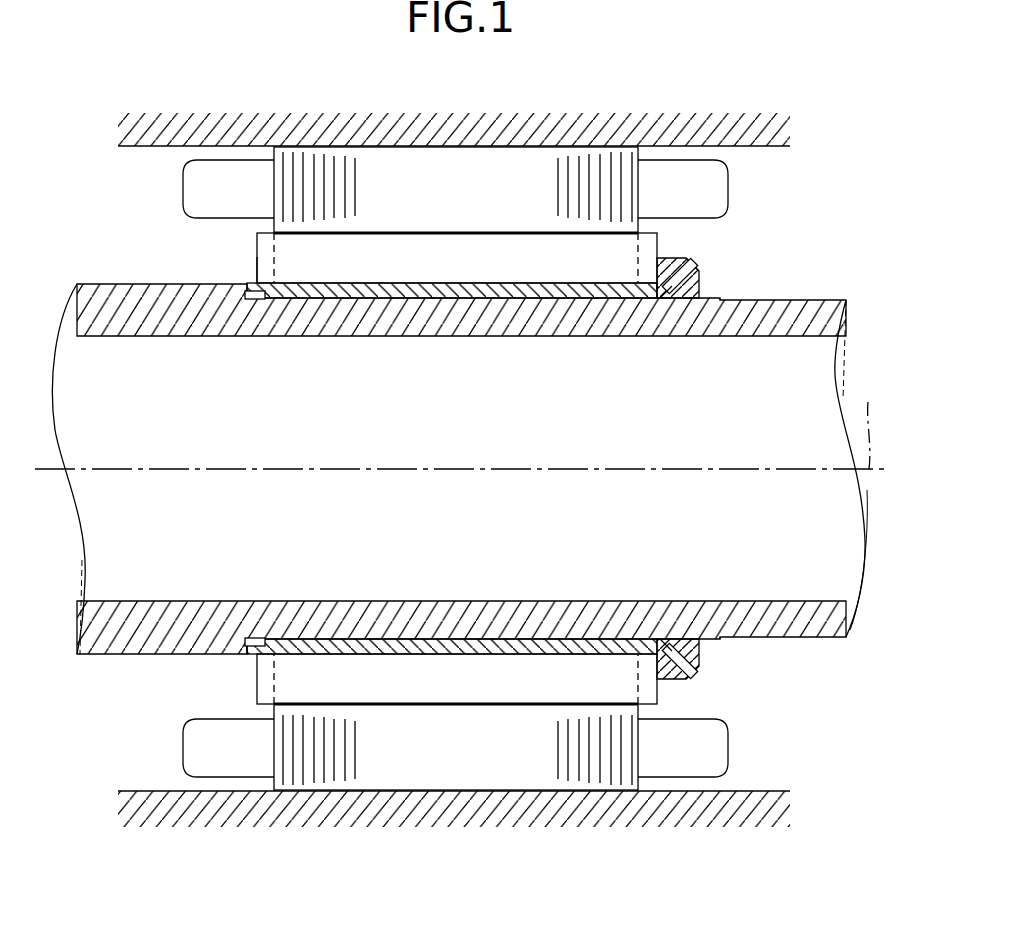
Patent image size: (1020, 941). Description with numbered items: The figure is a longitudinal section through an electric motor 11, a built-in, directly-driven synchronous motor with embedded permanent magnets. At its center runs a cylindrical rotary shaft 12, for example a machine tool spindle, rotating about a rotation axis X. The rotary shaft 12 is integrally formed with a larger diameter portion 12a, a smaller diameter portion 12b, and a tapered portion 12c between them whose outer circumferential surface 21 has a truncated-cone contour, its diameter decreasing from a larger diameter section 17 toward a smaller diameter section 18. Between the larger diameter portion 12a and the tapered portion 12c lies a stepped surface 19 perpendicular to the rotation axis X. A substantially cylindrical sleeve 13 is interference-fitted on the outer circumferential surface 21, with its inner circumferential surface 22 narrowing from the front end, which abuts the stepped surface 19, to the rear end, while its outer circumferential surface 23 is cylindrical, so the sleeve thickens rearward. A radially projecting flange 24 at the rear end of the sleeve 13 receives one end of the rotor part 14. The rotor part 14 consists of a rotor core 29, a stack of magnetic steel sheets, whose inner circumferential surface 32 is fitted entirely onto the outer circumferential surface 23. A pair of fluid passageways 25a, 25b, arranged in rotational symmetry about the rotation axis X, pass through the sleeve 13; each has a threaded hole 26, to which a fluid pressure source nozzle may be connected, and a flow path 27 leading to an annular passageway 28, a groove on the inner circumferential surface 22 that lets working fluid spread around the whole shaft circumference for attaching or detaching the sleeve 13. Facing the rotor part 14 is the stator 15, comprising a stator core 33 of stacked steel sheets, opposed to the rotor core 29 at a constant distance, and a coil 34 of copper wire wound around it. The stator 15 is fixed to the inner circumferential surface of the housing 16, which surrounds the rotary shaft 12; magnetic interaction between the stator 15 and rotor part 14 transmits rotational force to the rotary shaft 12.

The electric motor 11 is at (80, 228).
The rotary shaft 12 is at (123, 280).
The larger diameter portion 12a is at (90, 283).
The smaller diameter portion 12b is at (848, 300).
The tapered portion 12c is at (255, 652).
The sleeve 13 is at (240, 282).
The rotor part 14 is at (508, 224).
The stator 15 is at (742, 189).
The housing 16 is at (765, 146).
The larger diameter section 17 is at (255, 300).
The smaller diameter section 18 is at (722, 301).
The stepped surface 19 is at (258, 268).
The outer circumferential surface 21 is at (490, 300).
The inner circumferential surface 22 is at (445, 293).
The outer circumferential surface 23 is at (553, 284).
The flange 24 is at (702, 288).
The fluid passageway 25a is at (702, 250).
The fluid passageway 25b is at (714, 665).
The threaded hole 26 is at (692, 263).
The flow path 27 is at (682, 298).
The annular passageway 28 is at (650, 298).
The rotor core 29 is at (651, 232).
The inner circumferential surface 32 is at (390, 285).
The stator core 33 is at (266, 147).
The coil 34 is at (205, 160).
The rotation axis X is at (866, 423).